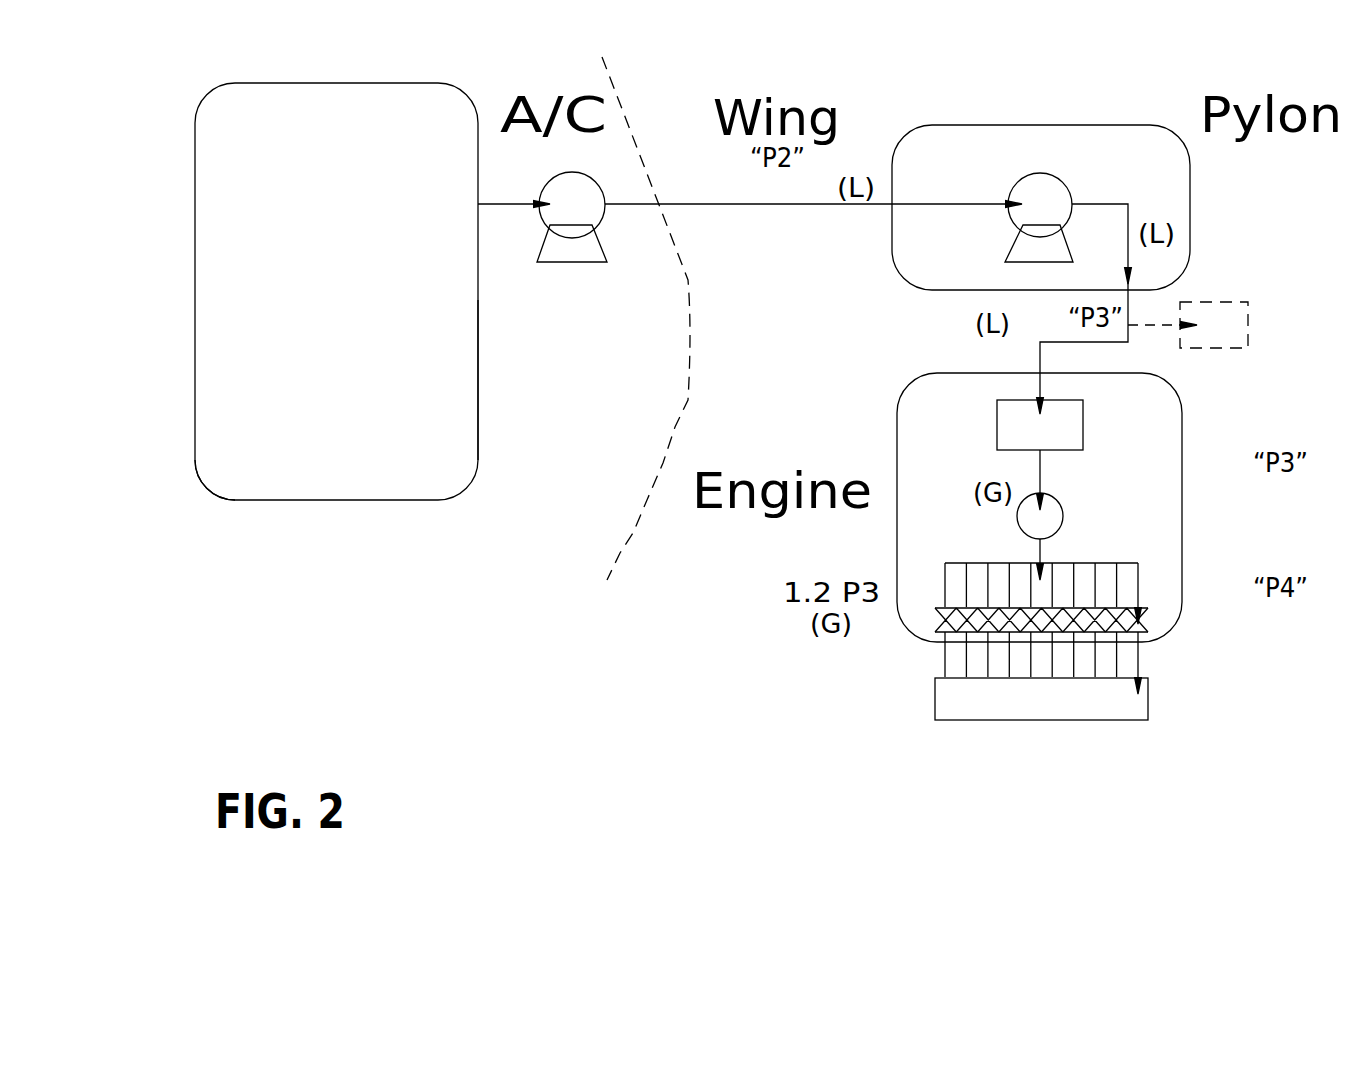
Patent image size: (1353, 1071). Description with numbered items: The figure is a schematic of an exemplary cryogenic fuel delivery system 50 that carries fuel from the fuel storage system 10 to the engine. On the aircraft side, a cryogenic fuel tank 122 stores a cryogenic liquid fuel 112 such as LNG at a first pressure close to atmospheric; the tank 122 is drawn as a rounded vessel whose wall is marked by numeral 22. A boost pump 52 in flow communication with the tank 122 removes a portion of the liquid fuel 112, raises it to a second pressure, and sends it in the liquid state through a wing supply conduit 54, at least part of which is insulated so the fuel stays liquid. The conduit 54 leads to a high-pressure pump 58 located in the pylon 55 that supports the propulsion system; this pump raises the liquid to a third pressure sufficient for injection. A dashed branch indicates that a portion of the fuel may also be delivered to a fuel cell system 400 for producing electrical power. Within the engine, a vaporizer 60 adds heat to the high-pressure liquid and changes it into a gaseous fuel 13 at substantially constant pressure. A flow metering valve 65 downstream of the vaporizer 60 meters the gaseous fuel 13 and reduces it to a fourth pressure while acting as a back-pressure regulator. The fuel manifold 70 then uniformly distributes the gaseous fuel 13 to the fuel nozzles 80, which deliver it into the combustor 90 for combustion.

The fuel storage system 10 is at (337, 595).
The cryogenic fuel delivery system 50 is at (482, 593).
The LNG tank 22 is at (483, 465).
The cryogenic liquid fuel 112 is at (438, 362).
The cryogenic fuel tank 122 is at (265, 477).
The boost pump 52 is at (588, 213).
The wing supply conduit 54 is at (710, 205).
The pylon 55 is at (1108, 115).
The high-pressure pump 58 is at (1057, 193).
The fuel cell system 400 is at (1240, 320).
The vaporizer 60 is at (1067, 422).
The gaseous fuel 13 is at (1042, 460).
The flow metering valve 65 is at (1047, 507).
The fuel manifold 70 is at (1128, 553).
The fuel nozzle 80 is at (1145, 628).
The combustor 90 is at (1130, 697).